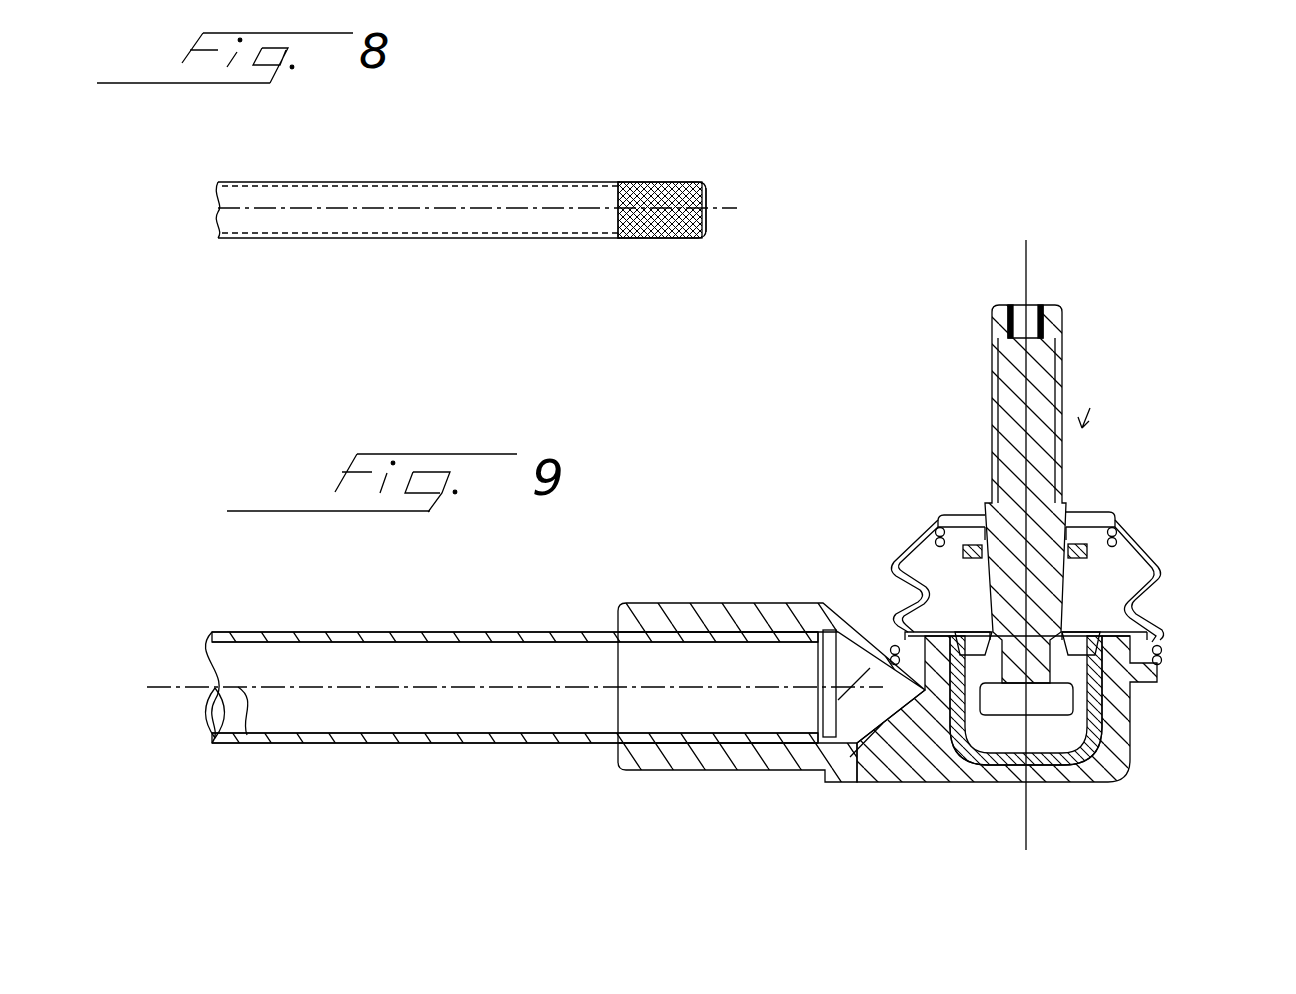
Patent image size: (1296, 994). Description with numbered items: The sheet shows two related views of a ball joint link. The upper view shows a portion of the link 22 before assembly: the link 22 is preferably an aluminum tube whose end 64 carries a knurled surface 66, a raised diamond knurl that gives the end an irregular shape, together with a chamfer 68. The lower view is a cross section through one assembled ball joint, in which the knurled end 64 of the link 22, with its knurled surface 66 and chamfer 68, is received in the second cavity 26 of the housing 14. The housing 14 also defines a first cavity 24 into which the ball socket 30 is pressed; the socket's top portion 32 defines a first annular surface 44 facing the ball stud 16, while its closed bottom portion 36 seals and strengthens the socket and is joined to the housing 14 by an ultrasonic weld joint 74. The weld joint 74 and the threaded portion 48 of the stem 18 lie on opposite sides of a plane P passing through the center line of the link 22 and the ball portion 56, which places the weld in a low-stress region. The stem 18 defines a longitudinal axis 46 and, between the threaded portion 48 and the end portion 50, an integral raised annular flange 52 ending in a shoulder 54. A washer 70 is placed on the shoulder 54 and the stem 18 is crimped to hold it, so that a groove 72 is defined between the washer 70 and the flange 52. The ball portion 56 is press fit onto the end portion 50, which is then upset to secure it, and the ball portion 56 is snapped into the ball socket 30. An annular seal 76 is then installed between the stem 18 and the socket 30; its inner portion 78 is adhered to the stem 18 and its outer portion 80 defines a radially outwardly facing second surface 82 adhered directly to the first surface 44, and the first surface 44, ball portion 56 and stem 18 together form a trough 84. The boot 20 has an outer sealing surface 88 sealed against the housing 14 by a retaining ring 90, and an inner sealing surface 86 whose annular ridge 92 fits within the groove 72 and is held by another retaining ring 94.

In FIG. 9, the housing 14 is at (1085, 778).
In FIG. 9, the ball stud 16 is at (1070, 515).
In FIG. 9, the stem 18 is at (1180, 602).
In FIG. 9, the boot 20 is at (1166, 572).
In FIG. 8, the link 22 is at (392, 233).
In FIG. 9, the link 22 is at (303, 735).
In FIG. 9, the first cavity 24 is at (1000, 782).
In FIG. 9, the second cavity 26 is at (618, 735).
In FIG. 9, the ball socket 30 is at (1103, 712).
In FIG. 9, the top portion 32 is at (1160, 688).
In FIG. 9, the bottom portion 36 is at (1060, 774).
In FIG. 9, the first annular surface 44 is at (935, 562).
In FIG. 9, the longitudinal axis 46 is at (1028, 262).
In FIG. 9, the threaded portion 48 is at (1063, 358).
In FIG. 9, the end portion 50 is at (1018, 735).
In FIG. 9, the annular flange 52 is at (1110, 515).
In FIG. 9, the shoulder 54 is at (975, 540).
In FIG. 9, the ball portion 56 is at (1103, 750).
In FIG. 8, the end 64 is at (640, 240).
In FIG. 9, the end 64 is at (660, 735).
In FIG. 8, the knurled surface 66 is at (662, 182).
In FIG. 9, the knurled surface 66 is at (700, 735).
In FIG. 8, the chamfer 68 is at (700, 240).
In FIG. 9, the chamfer 68 is at (820, 735).
In FIG. 9, the washer 70 is at (920, 560).
In FIG. 9, the groove 72 is at (1077, 515).
In FIG. 9, the ultrasonic weld joint 74 is at (1093, 748).
In FIG. 9, the annular seal 76 is at (985, 630).
In FIG. 9, the inner portion 78 is at (1070, 640).
In FIG. 9, the outer portion 80 is at (905, 625).
In FIG. 9, the second surface 82 is at (890, 782).
In FIG. 9, the trough 84 is at (1148, 612).
In FIG. 9, the inner sealing surface 86 is at (936, 560).
In FIG. 9, the outer sealing surface 88 is at (1165, 634).
In FIG. 9, the retaining ring 90 is at (1162, 655).
In FIG. 9, the annular ridge 92 is at (1113, 515).
In FIG. 9, the retaining ring 94 is at (1145, 524).
In FIG. 9, the plane P is at (240, 735).